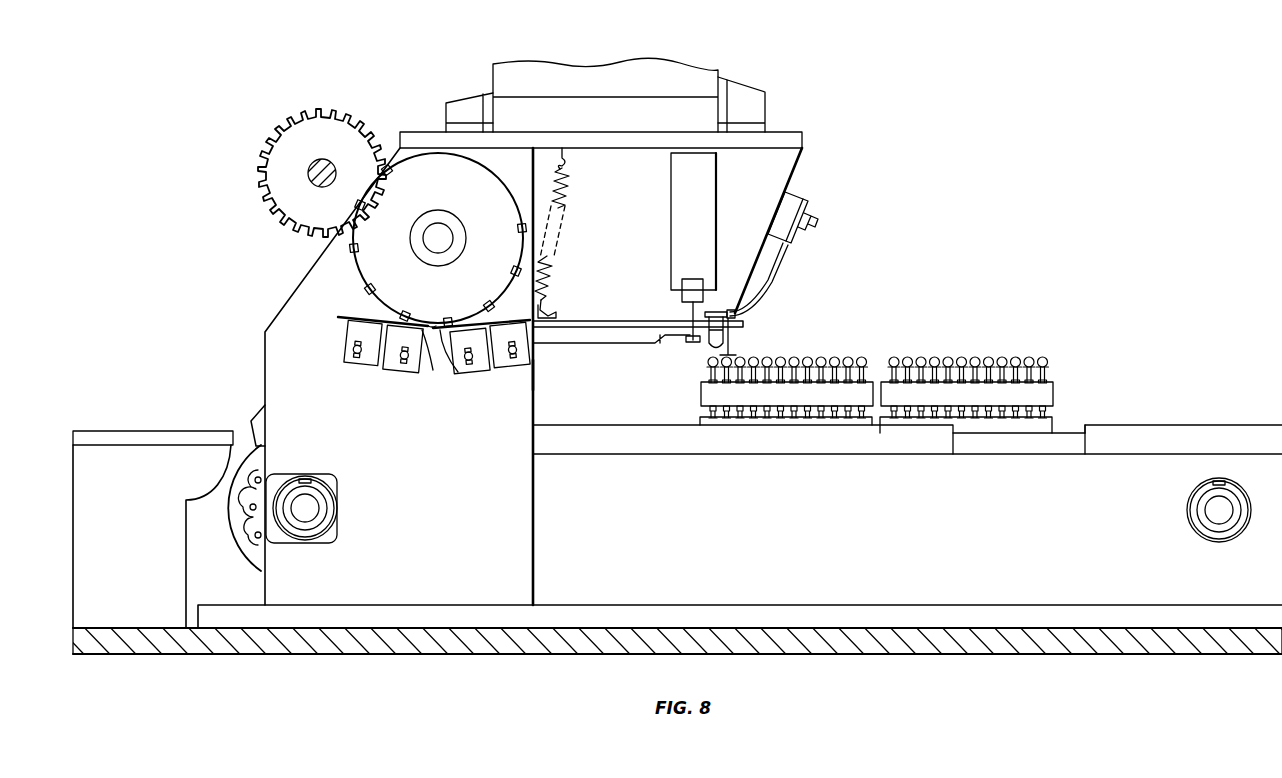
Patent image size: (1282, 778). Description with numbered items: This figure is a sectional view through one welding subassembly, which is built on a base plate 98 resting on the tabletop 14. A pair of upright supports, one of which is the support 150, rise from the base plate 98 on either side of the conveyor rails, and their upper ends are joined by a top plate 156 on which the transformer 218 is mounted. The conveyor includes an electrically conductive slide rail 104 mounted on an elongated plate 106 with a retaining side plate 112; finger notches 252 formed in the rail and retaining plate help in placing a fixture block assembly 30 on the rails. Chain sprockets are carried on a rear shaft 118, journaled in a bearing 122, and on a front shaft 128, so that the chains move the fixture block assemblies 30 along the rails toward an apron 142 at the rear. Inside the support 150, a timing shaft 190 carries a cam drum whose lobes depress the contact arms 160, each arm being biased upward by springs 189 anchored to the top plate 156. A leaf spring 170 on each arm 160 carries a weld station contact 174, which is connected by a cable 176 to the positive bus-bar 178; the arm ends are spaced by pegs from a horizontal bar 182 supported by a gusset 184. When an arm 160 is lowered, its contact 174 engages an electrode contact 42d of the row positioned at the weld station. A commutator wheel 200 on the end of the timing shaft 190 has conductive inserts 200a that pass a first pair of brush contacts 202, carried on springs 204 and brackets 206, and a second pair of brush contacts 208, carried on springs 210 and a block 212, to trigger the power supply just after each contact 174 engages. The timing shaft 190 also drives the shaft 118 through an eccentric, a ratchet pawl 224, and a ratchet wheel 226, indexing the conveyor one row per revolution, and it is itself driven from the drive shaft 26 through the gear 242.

The tabletop 14 is at (538, 650).
The drive shaft 26 is at (318, 170).
The fixture block assembly 30 is at (811, 330).
The electrode contacts 42d is at (713, 352).
The base plate 98 is at (624, 606).
The slide rail 104 is at (976, 450).
The elongated plate 106 is at (907, 504).
The retaining side plate 112 is at (778, 450).
The shaft 118 is at (310, 507).
The bearing 122 is at (331, 486).
The shaft 128 is at (1215, 513).
The apron 142 is at (178, 432).
The upright support 150 is at (533, 376).
The top plate 156 is at (803, 141).
The contact arm 160 is at (578, 343).
The leaf spring 170 is at (627, 321).
The weld station contact 174 is at (726, 333).
The electrical cable 176 is at (786, 280).
The positive bus-bar 178 is at (796, 205).
The horizontal bar 182 is at (681, 293).
The gusset 184 is at (679, 205).
The springs 189 is at (565, 183).
The timing shaft 190 is at (445, 242).
The commutator wheel 200 is at (438, 238).
The electrically conductive inserts 200a is at (356, 250).
The first pair of brush contacts 202 is at (426, 334).
The springs 204 is at (408, 326).
The brackets 206 is at (357, 366).
The second pair of brush contacts 208 is at (445, 334).
The springs 210 is at (492, 366).
The block 212 is at (533, 375).
The transformer 218 is at (632, 60).
The ratchet pawl 224 is at (258, 412).
The ratchet wheel 226 is at (238, 548).
The gear 242 is at (285, 135).
The finger notches 252 is at (1085, 440).